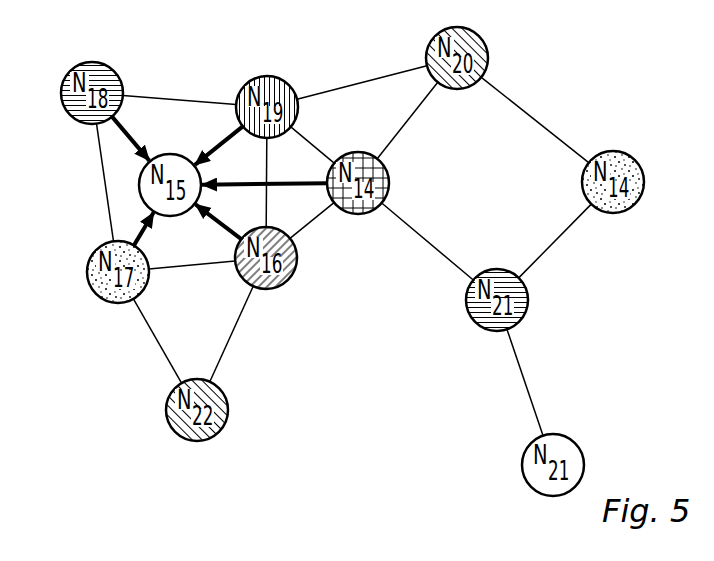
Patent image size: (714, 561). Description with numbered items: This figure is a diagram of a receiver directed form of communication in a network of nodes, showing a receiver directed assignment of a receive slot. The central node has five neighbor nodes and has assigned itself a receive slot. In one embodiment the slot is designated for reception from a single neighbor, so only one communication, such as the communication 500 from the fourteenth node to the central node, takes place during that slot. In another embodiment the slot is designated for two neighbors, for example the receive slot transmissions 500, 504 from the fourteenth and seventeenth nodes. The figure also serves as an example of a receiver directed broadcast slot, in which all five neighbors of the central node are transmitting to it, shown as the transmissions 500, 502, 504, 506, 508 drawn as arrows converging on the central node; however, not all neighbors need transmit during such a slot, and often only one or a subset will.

The communication 500 is at (293, 186).
The transmission 502 is at (211, 221).
The receive slot transmission 504 is at (152, 215).
The transmission 506 is at (123, 130).
The transmission 508 is at (226, 143).